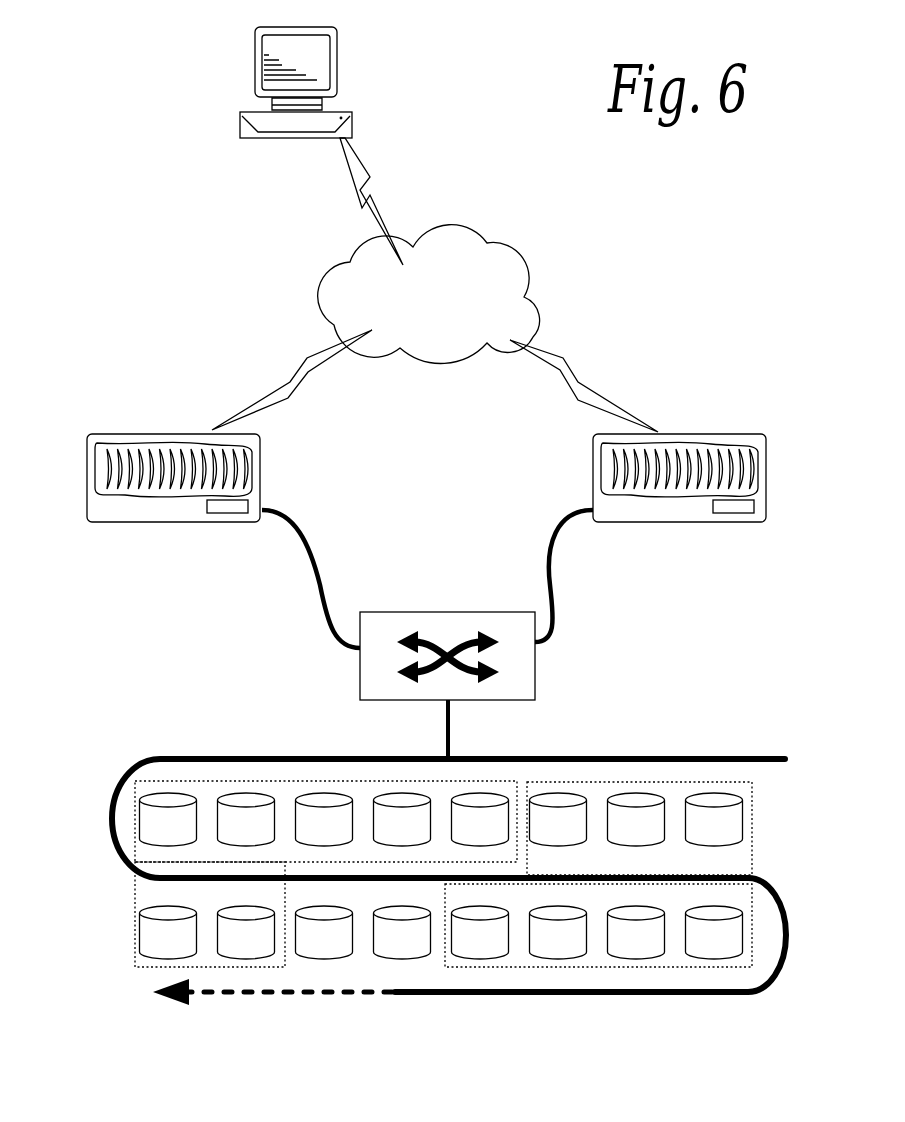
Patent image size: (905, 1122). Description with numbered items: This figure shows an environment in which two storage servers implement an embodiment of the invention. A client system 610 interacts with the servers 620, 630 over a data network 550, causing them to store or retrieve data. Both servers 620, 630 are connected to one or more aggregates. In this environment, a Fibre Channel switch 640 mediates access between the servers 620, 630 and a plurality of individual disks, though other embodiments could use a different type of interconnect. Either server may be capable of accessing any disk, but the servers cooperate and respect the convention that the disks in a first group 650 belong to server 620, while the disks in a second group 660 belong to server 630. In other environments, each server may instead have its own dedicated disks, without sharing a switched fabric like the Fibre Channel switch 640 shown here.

The data network 550 is at (497, 319).
The client system 610 is at (257, 72).
The storage server 620 is at (87, 515).
The storage server 630 is at (768, 512).
The Fibre Channel switch 640 is at (536, 675).
The first group of disks 650 is at (135, 962).
The second group of disks 660 is at (752, 820).